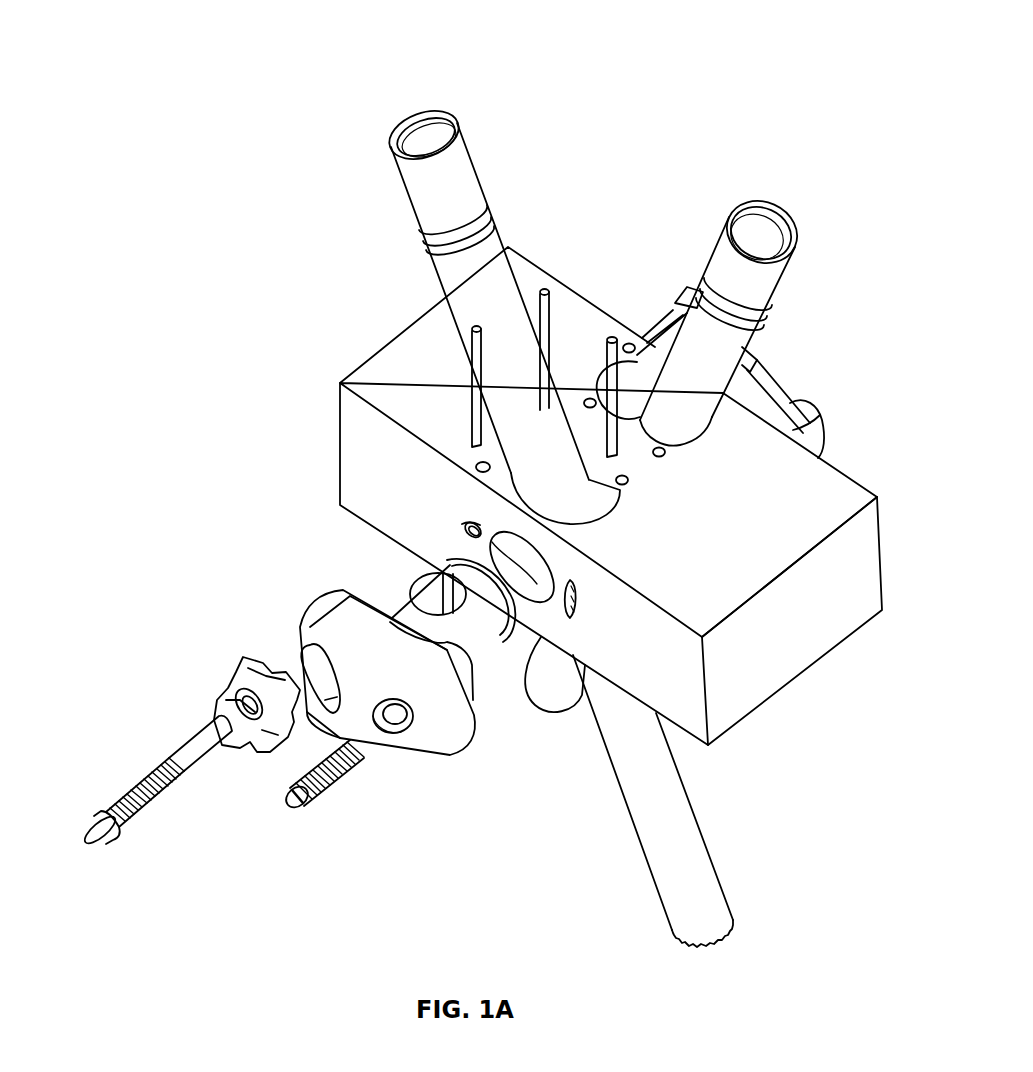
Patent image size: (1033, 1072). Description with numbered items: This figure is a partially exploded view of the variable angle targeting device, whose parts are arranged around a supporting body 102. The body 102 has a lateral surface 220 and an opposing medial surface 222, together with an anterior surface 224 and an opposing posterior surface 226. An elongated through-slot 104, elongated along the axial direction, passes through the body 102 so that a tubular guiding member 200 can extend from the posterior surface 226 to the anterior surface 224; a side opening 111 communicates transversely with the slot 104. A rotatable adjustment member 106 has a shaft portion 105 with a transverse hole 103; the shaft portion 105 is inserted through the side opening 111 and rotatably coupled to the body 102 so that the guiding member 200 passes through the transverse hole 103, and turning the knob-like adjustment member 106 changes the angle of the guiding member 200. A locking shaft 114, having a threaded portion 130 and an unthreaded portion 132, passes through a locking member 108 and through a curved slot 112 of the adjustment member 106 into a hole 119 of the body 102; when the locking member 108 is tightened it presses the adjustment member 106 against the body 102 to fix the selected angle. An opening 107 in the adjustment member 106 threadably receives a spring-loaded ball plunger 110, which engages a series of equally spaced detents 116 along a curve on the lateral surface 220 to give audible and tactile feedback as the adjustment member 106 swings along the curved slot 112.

The supporting body 102 is at (600, 506).
The transverse hole 103 is at (427, 590).
The elongated through-slot 104 is at (650, 382).
The shaft portion 105 is at (472, 660).
The rotatable adjustment member 106 is at (381, 676).
The opening 107 is at (397, 743).
The locking member 108 is at (242, 664).
The spring-loaded ball plunger 110 is at (308, 806).
The side opening 111 is at (474, 523).
The curved slot 112 is at (305, 650).
The locking shaft 114 is at (144, 787).
The detents 116 is at (580, 606).
The hole 119 is at (472, 526).
The threaded portion 130 is at (165, 808).
The unthreaded portion 132 is at (204, 765).
The tubular guiding member 200 is at (420, 192).
The lateral surface 220 is at (645, 682).
The medial surface 222 is at (852, 473).
The anterior surface 224 is at (760, 715).
The posterior surface 226 is at (722, 557).